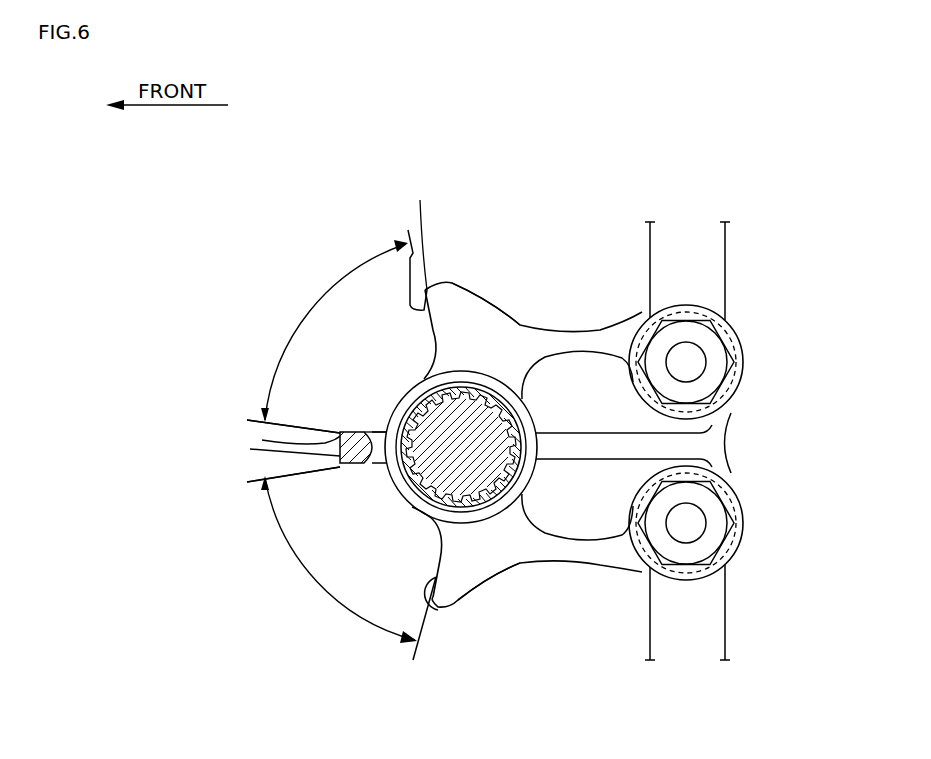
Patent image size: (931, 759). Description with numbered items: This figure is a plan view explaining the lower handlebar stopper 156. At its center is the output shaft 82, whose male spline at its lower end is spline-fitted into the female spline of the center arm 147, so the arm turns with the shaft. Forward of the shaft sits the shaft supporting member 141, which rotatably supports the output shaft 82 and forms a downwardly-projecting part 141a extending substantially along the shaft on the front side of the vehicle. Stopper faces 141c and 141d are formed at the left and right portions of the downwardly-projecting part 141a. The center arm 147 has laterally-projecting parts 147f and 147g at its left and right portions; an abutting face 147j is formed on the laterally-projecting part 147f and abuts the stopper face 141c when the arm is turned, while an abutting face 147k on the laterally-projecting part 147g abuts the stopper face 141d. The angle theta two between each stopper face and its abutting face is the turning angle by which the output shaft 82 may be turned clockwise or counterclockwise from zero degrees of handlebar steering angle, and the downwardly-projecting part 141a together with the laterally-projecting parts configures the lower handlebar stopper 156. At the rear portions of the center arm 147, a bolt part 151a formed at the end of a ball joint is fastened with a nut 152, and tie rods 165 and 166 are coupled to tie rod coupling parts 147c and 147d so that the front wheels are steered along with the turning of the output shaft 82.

The output shaft 82 is at (465, 427).
The shaft supporting member 141 is at (348, 462).
The downwardly-projecting part 141a is at (255, 466).
The stopper face 141c is at (365, 466).
The stopper face 141d is at (362, 432).
The center arm 147 is at (307, 420).
The tie rod coupling part 147c is at (748, 528).
The tie rod coupling part 147d is at (742, 362).
The laterally-projecting part 147f is at (458, 600).
The laterally-projecting part 147g is at (451, 300).
The abutting face 147j is at (430, 605).
The abutting face 147k is at (208, 425).
The bolt part 151a is at (687, 352).
The nut 152 is at (710, 378).
The lower handlebar stopper 156 is at (256, 276).
The tie rod 165 is at (715, 633).
The tie rod 166 is at (693, 255).